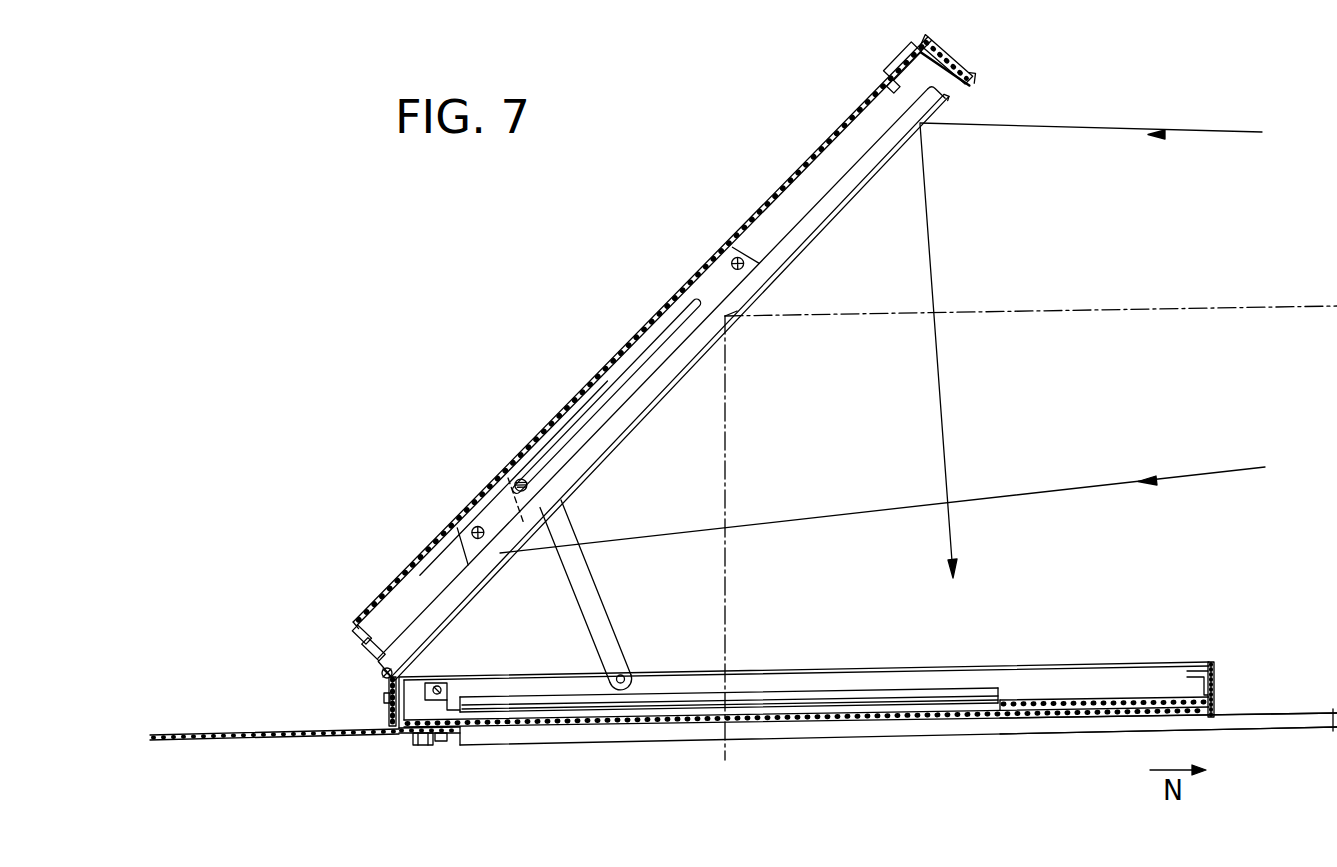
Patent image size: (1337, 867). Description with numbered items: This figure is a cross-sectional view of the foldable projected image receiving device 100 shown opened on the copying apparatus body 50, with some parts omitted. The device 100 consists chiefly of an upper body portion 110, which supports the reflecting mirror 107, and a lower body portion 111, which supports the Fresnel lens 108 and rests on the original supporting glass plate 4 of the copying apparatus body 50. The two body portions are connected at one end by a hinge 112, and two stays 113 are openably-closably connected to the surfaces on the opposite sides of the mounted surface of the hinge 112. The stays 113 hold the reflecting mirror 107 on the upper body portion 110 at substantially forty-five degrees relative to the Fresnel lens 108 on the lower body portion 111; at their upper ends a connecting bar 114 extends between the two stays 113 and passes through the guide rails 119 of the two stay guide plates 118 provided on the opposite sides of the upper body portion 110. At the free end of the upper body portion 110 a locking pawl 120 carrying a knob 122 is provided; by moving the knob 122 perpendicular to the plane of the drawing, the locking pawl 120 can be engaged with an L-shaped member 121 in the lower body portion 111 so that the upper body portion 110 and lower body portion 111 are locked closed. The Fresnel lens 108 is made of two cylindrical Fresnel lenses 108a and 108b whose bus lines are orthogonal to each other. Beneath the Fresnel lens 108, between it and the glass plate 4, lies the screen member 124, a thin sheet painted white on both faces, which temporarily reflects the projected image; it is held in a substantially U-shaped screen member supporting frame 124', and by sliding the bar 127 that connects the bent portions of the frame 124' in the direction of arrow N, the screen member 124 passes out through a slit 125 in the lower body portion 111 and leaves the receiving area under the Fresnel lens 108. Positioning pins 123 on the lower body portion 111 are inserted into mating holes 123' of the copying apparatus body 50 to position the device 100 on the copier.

The original supporting glass plate 4 is at (1070, 730).
The copying apparatus body 50 is at (240, 733).
The projected image receiving device 100 is at (768, 186).
The reflecting mirror 107 is at (833, 208).
The Fresnel lens 108 is at (765, 688).
The cylindrical Fresnel lens 108a is at (855, 690).
The cylindrical Fresnel lens 108b is at (936, 700).
The upper body portion 110 is at (413, 566).
The lower body portion 111 is at (1156, 662).
The hinge 112 is at (383, 677).
The stays 113 is at (606, 628).
The connecting bar 114 is at (512, 478).
The stay guide plates 118 is at (702, 292).
The guide rails 119 is at (612, 383).
The locking pawl 120 is at (983, 102).
The L-shaped member 121 is at (1213, 670).
The knob 122 is at (896, 60).
The positioning pins 123 is at (397, 760).
The mating holes 123' is at (411, 771).
The screen member 124 is at (870, 750).
The screen member supporting frame 124' is at (822, 709).
The slit 125 is at (1222, 707).
The bar 127 is at (442, 686).